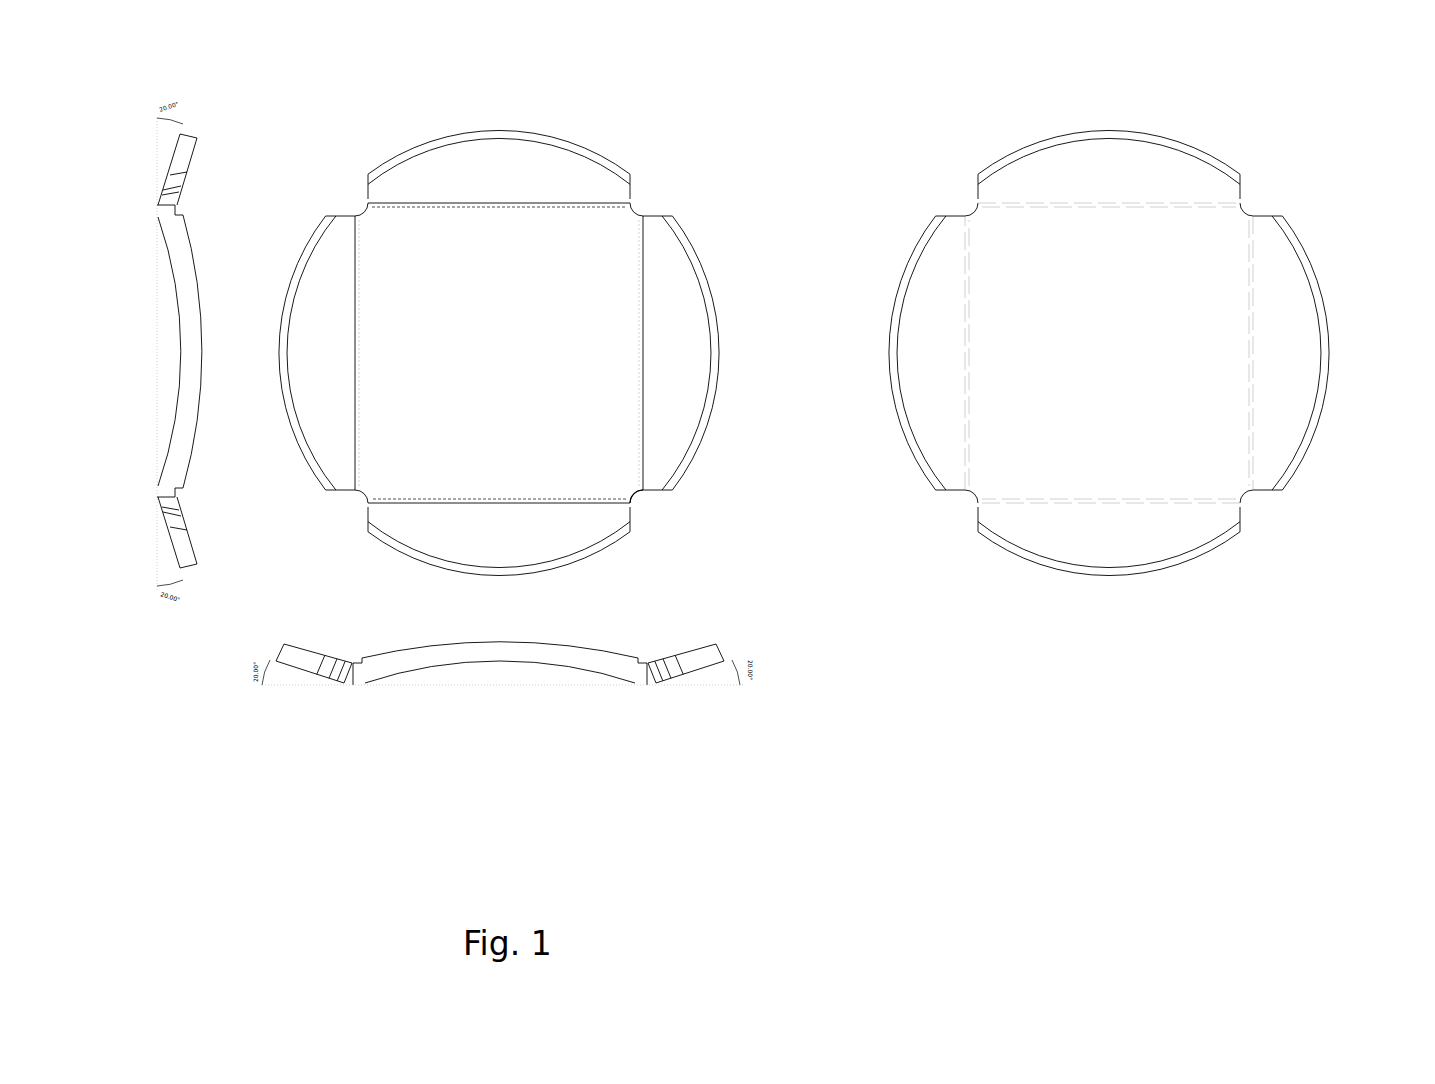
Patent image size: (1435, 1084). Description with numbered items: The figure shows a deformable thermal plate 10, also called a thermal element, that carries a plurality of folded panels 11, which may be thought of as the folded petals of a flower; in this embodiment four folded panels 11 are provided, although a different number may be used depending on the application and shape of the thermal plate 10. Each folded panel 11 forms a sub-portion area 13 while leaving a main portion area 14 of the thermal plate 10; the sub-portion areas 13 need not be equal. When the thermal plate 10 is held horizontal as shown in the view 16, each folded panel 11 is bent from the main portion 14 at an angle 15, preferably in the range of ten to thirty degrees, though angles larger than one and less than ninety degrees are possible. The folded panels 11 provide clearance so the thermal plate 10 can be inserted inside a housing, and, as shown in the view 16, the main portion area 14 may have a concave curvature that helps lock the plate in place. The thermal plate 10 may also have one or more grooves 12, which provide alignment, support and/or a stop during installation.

The thermal plate 10 is at (582, 133).
The folded panel 11 is at (690, 228).
The groove 12 is at (657, 500).
The sub-portion area 13 is at (1200, 183).
The main portion area 14 is at (1232, 260).
The angle 15 is at (690, 688).
The horizontal view 16 is at (307, 682).